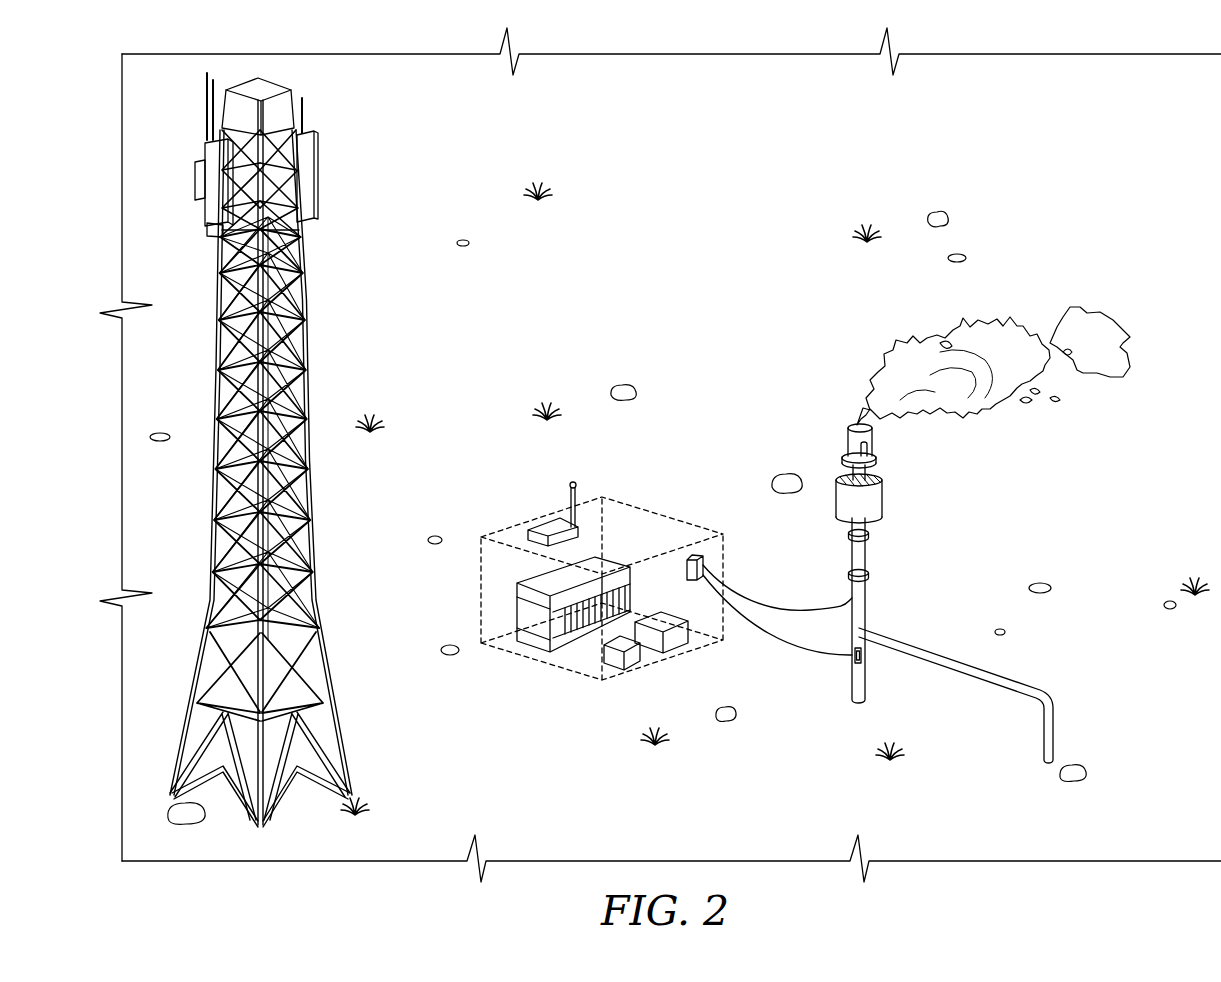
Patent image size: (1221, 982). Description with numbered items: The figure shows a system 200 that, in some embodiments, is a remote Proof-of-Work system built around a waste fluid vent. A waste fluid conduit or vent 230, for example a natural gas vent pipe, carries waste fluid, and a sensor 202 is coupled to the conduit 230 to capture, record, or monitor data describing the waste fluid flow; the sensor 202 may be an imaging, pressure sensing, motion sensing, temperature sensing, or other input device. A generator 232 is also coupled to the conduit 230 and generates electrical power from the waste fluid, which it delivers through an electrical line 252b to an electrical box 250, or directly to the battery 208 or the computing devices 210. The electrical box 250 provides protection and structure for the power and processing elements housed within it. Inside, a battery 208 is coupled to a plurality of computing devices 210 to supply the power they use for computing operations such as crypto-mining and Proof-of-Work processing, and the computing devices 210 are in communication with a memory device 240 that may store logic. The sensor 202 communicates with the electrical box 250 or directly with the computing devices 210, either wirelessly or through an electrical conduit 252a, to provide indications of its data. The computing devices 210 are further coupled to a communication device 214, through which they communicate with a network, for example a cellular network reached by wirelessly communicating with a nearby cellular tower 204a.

The system 200 is at (305, 30).
The cellular tower 204a is at (315, 546).
The communication device 214 is at (577, 479).
The electrical box 250 is at (481, 536).
The computing devices 210 is at (562, 622).
The memory device 240 is at (612, 657).
The battery 208 is at (676, 641).
The electrical conduit 252a is at (815, 655).
The electrical line 252b is at (810, 608).
The generator 232 is at (876, 503).
The waste fluid conduit or vent 230 is at (863, 598).
The sensor 202 is at (862, 660).